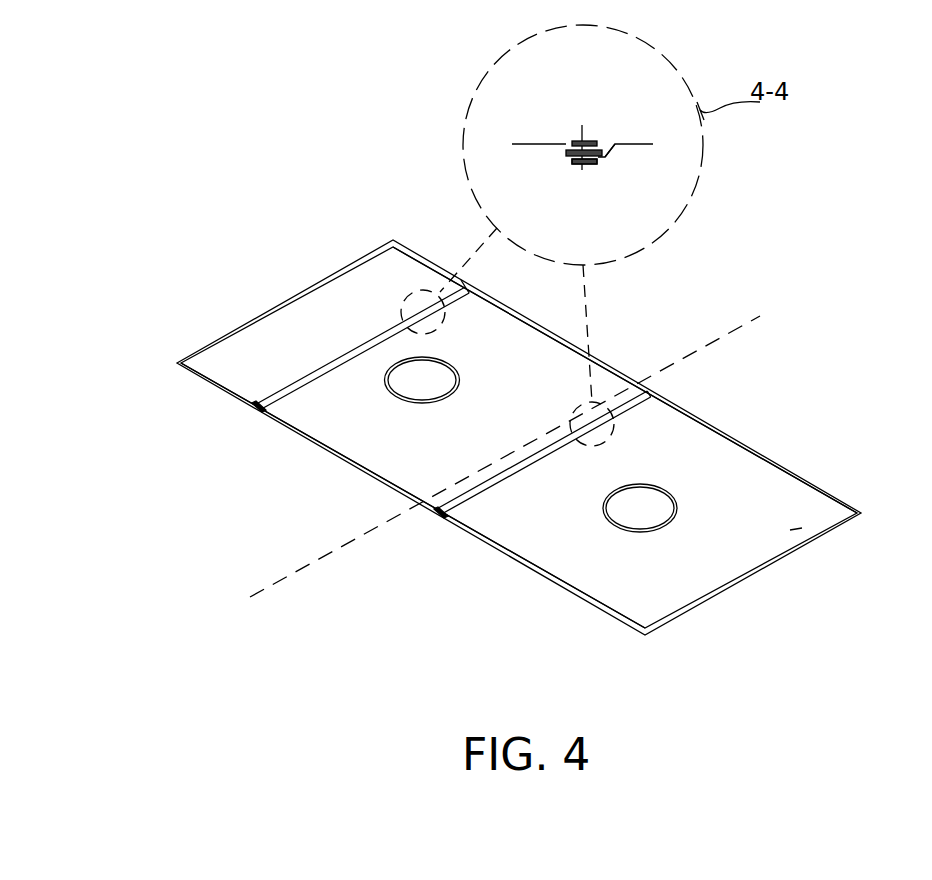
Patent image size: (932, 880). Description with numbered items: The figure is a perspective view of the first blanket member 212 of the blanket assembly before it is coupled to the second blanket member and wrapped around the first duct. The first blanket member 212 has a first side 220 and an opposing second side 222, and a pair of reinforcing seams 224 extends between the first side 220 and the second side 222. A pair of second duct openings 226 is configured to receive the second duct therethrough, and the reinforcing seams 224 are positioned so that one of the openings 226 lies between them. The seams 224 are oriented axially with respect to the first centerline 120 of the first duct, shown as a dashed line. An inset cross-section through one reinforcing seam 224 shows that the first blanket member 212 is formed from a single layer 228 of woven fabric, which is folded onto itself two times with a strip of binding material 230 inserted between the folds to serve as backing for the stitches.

The first blanket member 212 is at (162, 197).
The first side 220 is at (607, 612).
The second side 222 is at (793, 473).
The reinforcing seams 224 is at (257, 400).
The second duct openings 226 is at (437, 375).
The layer of woven fabric 228 is at (625, 148).
The binding material 230 is at (590, 170).
The first centerline 120 is at (742, 322).